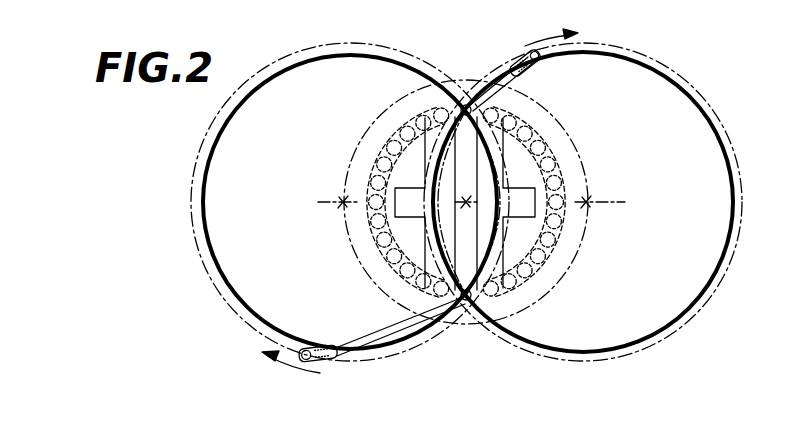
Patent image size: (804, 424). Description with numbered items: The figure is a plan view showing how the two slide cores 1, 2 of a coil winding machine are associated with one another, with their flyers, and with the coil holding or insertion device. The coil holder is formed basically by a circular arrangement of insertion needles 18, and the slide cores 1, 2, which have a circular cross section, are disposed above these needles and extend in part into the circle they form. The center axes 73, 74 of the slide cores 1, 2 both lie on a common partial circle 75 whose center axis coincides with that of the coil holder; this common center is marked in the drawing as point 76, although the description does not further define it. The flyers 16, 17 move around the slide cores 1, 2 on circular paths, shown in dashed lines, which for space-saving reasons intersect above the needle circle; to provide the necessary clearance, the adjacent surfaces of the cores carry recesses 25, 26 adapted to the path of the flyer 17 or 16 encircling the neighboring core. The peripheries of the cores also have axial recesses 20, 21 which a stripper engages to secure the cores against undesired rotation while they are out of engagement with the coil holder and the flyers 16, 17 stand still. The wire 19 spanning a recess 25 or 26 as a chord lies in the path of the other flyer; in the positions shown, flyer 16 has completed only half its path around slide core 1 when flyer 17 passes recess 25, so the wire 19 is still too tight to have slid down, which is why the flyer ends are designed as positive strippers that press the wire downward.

The slide core 1 is at (660, 311).
The slide core 2 is at (260, 300).
The flyer 16 is at (538, 70).
The flyer 17 is at (320, 347).
The insertion needles 18 is at (464, 105).
The wire 19 is at (507, 74).
The axial recess 20 is at (523, 208).
The axial recess 21 is at (403, 212).
The recess 25 is at (485, 148).
The recess 26 is at (420, 157).
The center axis 73 is at (588, 205).
The center axis 74 is at (343, 206).
The partial circle 75 is at (350, 169).
The central axis 76 is at (470, 201).